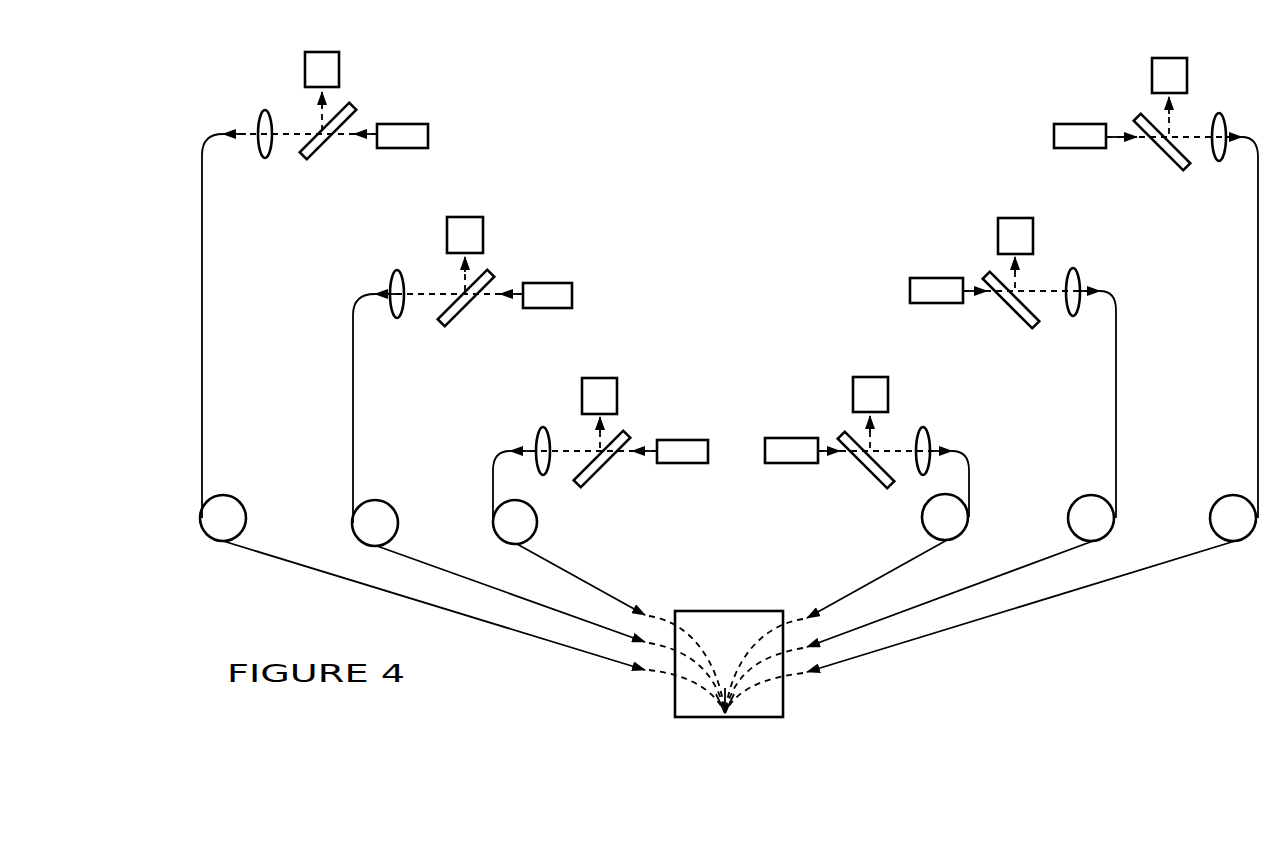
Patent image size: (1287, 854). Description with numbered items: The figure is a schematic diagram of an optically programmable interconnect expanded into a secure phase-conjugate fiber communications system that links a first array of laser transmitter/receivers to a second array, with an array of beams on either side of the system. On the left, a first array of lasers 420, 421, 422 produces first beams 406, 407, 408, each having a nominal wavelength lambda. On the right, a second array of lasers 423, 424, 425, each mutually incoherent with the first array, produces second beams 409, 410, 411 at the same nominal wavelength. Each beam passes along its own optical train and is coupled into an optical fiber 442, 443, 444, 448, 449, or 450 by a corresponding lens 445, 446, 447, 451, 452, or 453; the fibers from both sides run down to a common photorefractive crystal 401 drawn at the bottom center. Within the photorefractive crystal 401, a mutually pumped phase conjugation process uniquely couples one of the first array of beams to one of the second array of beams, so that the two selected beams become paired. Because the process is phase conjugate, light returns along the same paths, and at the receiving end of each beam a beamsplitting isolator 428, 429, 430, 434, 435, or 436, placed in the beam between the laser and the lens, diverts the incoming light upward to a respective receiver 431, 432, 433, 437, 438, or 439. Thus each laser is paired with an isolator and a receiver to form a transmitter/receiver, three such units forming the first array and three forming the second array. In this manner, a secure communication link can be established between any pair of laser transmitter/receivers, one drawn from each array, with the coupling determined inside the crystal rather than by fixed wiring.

The photorefractive crystal 401 is at (726, 631).
The first beam 406 is at (583, 473).
The first beam 407 is at (449, 327).
The first beam 408 is at (300, 163).
The second beam 409 is at (863, 486).
The second beam 410 is at (1029, 322).
The second beam 411 is at (1164, 168).
The laser 420 is at (692, 429).
The laser 421 is at (558, 273).
The laser 422 is at (425, 114).
The laser 423 is at (791, 422).
The laser 424 is at (922, 266).
The laser 425 is at (1042, 131).
The beamsplitting isolator 428 is at (621, 434).
The beamsplitting isolator 429 is at (485, 273).
The beamsplitting isolator 430 is at (355, 106).
The receiver 431 is at (600, 369).
The receiver 432 is at (469, 208).
The receiver 433 is at (293, 57).
The beamsplitting isolator 434 is at (868, 485).
The beamsplitting isolator 435 is at (1030, 321).
The beamsplitting isolator 436 is at (1176, 167).
The receiver 437 is at (874, 368).
The receiver 438 is at (1010, 212).
The receiver 439 is at (1135, 70).
The optical fiber 442 is at (546, 524).
The optical fiber 443 is at (389, 495).
The optical fiber 444 is at (239, 493).
The lens 445 is at (537, 429).
The lens 446 is at (393, 269).
The lens 447 is at (236, 118).
The optical fiber 448 is at (972, 502).
The optical fiber 449 is at (1064, 523).
The optical fiber 450 is at (1215, 494).
The lens 451 is at (948, 433).
The lens 452 is at (1097, 273).
The lens 453 is at (1245, 113).